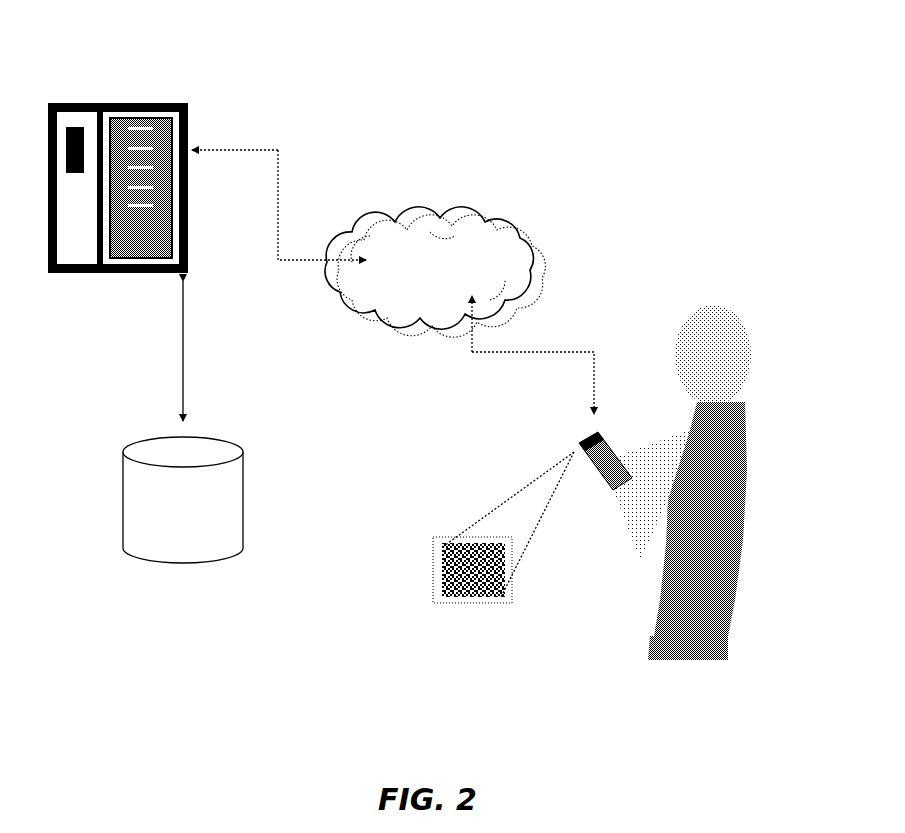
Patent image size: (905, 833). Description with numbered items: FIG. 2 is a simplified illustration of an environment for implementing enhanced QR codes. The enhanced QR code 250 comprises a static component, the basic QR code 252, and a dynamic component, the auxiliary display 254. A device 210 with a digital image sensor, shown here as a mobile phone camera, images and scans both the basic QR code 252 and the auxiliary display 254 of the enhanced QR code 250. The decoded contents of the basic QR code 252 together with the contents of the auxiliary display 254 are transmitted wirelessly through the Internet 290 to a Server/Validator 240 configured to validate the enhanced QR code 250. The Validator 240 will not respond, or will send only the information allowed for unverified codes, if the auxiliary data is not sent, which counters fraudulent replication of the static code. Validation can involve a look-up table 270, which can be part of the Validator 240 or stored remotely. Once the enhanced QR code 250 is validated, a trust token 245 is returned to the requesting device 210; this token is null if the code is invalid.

The Validator 240 is at (147, 103).
The trust token 245 is at (279, 187).
The Internet 290 is at (483, 220).
The device 210 is at (582, 436).
The look-up table 270 is at (227, 438).
The enhanced QR code 250 is at (449, 513).
The basic QR code 252 is at (437, 570).
The auxiliary display 254 is at (435, 627).